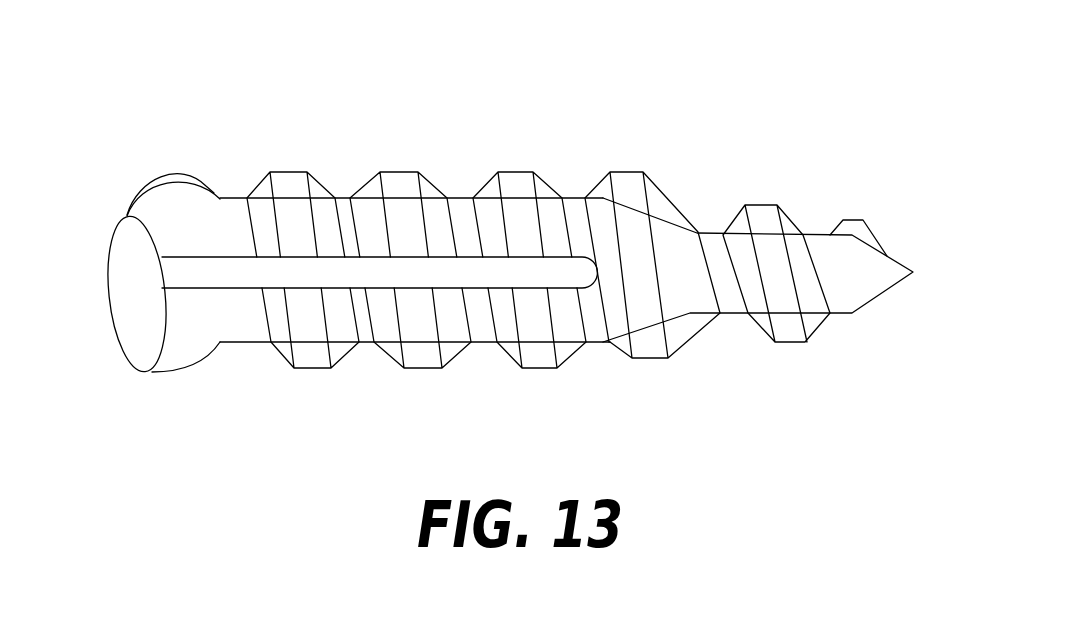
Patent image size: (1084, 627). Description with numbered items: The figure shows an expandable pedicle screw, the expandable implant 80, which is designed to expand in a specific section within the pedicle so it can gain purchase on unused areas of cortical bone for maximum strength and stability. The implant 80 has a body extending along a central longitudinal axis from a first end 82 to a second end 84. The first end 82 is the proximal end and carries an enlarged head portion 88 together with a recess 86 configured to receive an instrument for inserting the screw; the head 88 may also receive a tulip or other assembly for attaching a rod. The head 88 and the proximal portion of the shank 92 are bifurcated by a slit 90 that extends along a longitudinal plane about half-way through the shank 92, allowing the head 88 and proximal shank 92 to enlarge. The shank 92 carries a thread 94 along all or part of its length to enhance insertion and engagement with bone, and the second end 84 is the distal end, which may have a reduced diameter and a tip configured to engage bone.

The expandable implant 80 is at (223, 90).
The first end 82 is at (127, 215).
The second end 84 is at (913, 272).
The recess 86 is at (125, 287).
The enlarged head portion 88 is at (185, 180).
The slit 90 is at (362, 273).
The shank 92 is at (450, 198).
The thread 94 is at (515, 170).